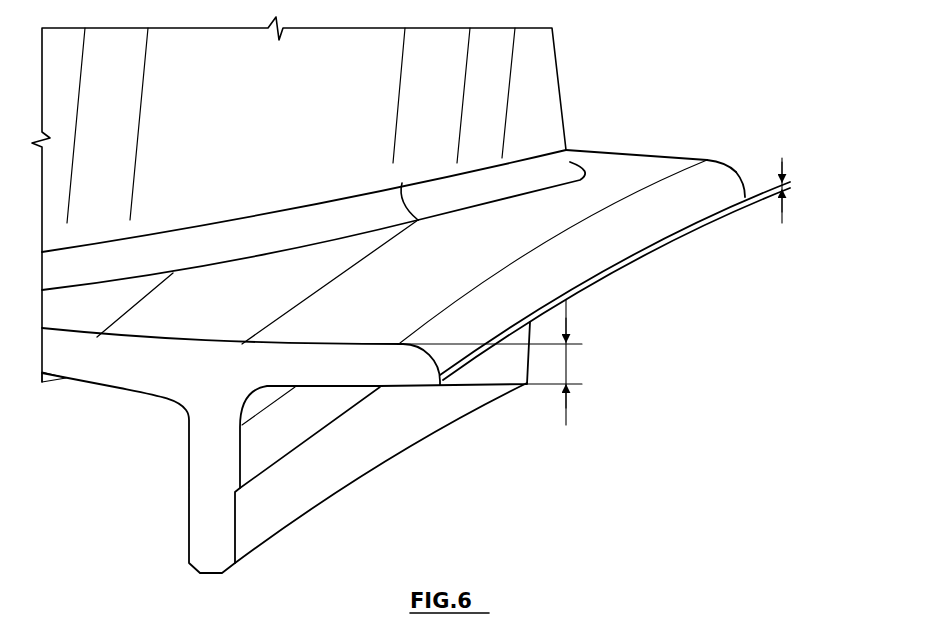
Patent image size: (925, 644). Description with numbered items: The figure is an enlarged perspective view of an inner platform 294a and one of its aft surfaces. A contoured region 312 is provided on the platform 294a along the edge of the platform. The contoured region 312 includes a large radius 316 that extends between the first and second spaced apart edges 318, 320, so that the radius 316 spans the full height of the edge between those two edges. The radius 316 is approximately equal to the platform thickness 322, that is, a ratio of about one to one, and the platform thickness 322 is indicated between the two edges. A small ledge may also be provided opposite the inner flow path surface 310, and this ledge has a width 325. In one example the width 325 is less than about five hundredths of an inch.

The inner flow path surface 310 is at (633, 162).
The platform 294a is at (721, 157).
The contoured region 312 is at (738, 169).
The radius 316 is at (668, 220).
The first spaced apart edge 318 is at (752, 190).
The second spaced apart edge 320 is at (436, 358).
The platform thickness 322 is at (566, 368).
The width 325 is at (783, 215).